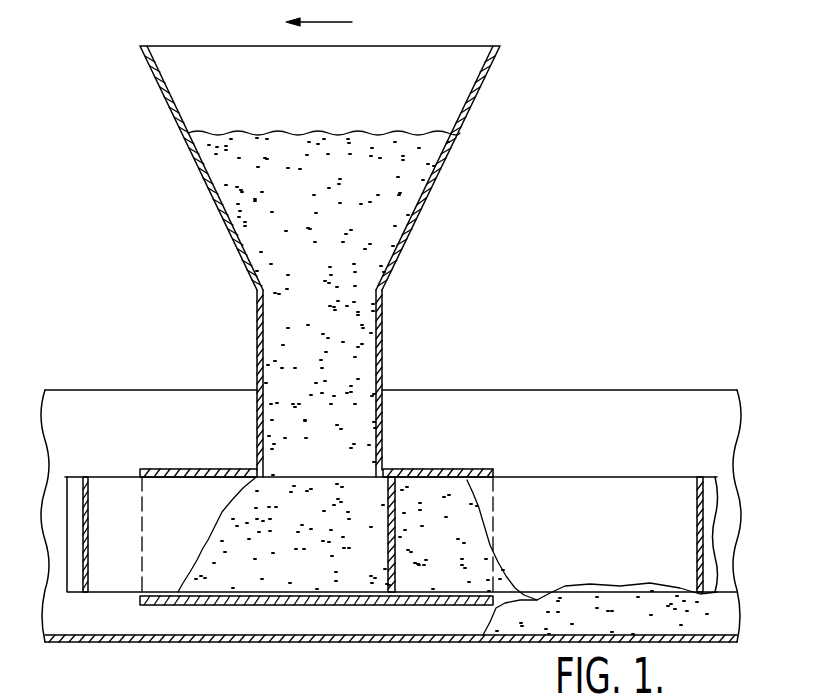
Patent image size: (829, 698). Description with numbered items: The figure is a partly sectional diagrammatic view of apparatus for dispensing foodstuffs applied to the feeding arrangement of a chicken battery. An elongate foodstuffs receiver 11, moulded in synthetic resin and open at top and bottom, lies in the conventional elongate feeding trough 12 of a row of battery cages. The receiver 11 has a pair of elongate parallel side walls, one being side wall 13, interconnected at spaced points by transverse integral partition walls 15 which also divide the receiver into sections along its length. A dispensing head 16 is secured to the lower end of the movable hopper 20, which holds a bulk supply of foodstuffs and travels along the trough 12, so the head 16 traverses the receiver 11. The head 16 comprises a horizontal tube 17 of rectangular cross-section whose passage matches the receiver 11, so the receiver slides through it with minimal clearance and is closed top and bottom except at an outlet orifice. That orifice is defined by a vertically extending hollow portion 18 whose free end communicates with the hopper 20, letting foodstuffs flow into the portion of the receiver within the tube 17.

The foodstuffs receiver 11 is at (73, 460).
The feeding trough 12 is at (440, 407).
The side wall 13 is at (100, 497).
The partition wall 15 is at (88, 543).
The dispensing head 16 is at (199, 460).
The horizontal tube 17 is at (195, 605).
The vertically extending hollow portion 18 is at (383, 387).
The hopper 20 is at (437, 188).